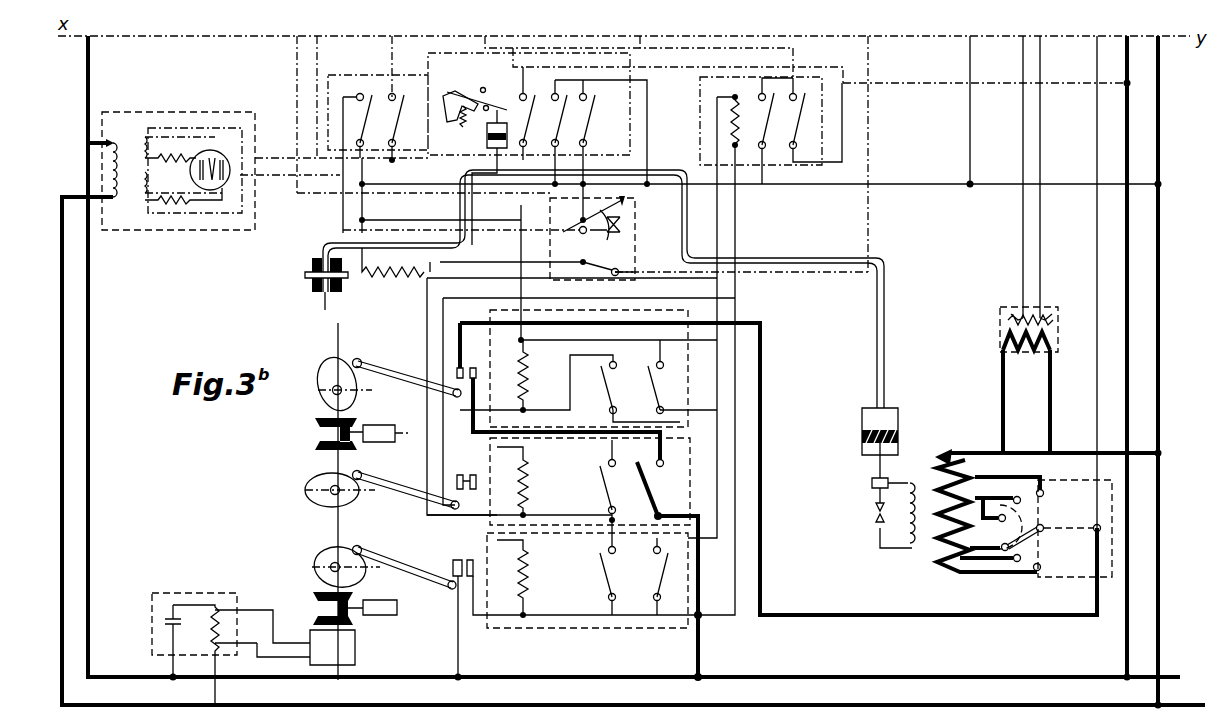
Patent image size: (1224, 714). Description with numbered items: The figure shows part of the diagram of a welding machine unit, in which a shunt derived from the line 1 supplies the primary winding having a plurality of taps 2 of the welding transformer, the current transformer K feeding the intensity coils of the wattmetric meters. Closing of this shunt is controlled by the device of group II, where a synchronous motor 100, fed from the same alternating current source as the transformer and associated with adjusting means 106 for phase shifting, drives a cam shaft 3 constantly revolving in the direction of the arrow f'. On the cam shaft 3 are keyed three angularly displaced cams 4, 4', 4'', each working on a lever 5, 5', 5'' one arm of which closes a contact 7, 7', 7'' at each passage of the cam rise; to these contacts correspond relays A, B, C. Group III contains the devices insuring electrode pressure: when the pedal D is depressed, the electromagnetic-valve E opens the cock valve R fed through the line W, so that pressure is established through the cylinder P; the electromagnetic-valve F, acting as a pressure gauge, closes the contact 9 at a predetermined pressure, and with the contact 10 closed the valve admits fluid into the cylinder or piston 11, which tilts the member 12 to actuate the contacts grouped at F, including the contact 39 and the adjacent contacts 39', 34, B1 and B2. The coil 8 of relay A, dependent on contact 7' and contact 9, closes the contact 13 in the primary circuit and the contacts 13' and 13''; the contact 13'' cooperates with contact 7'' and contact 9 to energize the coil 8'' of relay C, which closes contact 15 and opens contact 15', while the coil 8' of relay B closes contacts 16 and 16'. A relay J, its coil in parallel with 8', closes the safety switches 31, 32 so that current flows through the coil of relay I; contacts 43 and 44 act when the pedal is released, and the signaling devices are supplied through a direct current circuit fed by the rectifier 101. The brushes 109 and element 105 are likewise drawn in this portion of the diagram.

The line 1 is at (633, 370).
The taps of the primary winding 2 is at (960, 458).
The cam shaft 3 is at (347, 461).
The cam 4 is at (334, 384).
The cam 4' is at (331, 490).
The cam 4'' is at (336, 567).
The lever 5 is at (407, 369).
The lever 5' is at (406, 485).
The lever 5'' is at (405, 563).
The contact 7 is at (453, 372).
The contact 7' is at (455, 482).
The contact 7'' is at (477, 618).
The coil of relay A 8 is at (514, 376).
The coil of relay B 8' is at (512, 482).
The coil of relay C 8'' is at (511, 579).
The contact 9 is at (584, 150).
The contact 10 is at (596, 270).
The piston 11 is at (487, 141).
The member 12 is at (453, 113).
The contact 13 is at (487, 389).
The contact 13' is at (618, 388).
The contact 13'' is at (668, 388).
The contact 15 is at (594, 581).
The contact 15' is at (643, 581).
The contact 16 is at (593, 503).
The contact 16' is at (644, 477).
The contact 31 is at (811, 120).
The contact 32 is at (769, 131).
The contact 34 is at (592, 231).
The contact 39 is at (588, 132).
The contact 39' is at (537, 113).
The contact 43 is at (357, 164).
The contact 44 is at (391, 129).
The synchronous motor 100 is at (356, 649).
The rectifier 101 is at (228, 182).
The valve 105 is at (871, 488).
The adjusting means 106 is at (205, 593).
The brush 109 is at (382, 426).
The relay A is at (690, 380).
The relay B is at (690, 468).
The relay C is at (690, 580).
The pedal D is at (520, 255).
The electromagnetic-valve E is at (365, 278).
The electromagnetic-valve F is at (328, 92).
The relay I is at (889, 423).
The group II is at (372, 501).
The group III is at (440, 195).
The relay J is at (822, 122).
The current transformer K is at (1016, 380).
The cylinder P is at (862, 428).
The cock valve R is at (320, 280).
The line W is at (325, 312).
The contact B1 is at (477, 103).
The contact B2 is at (493, 83).
The arrow f' is at (279, 479).